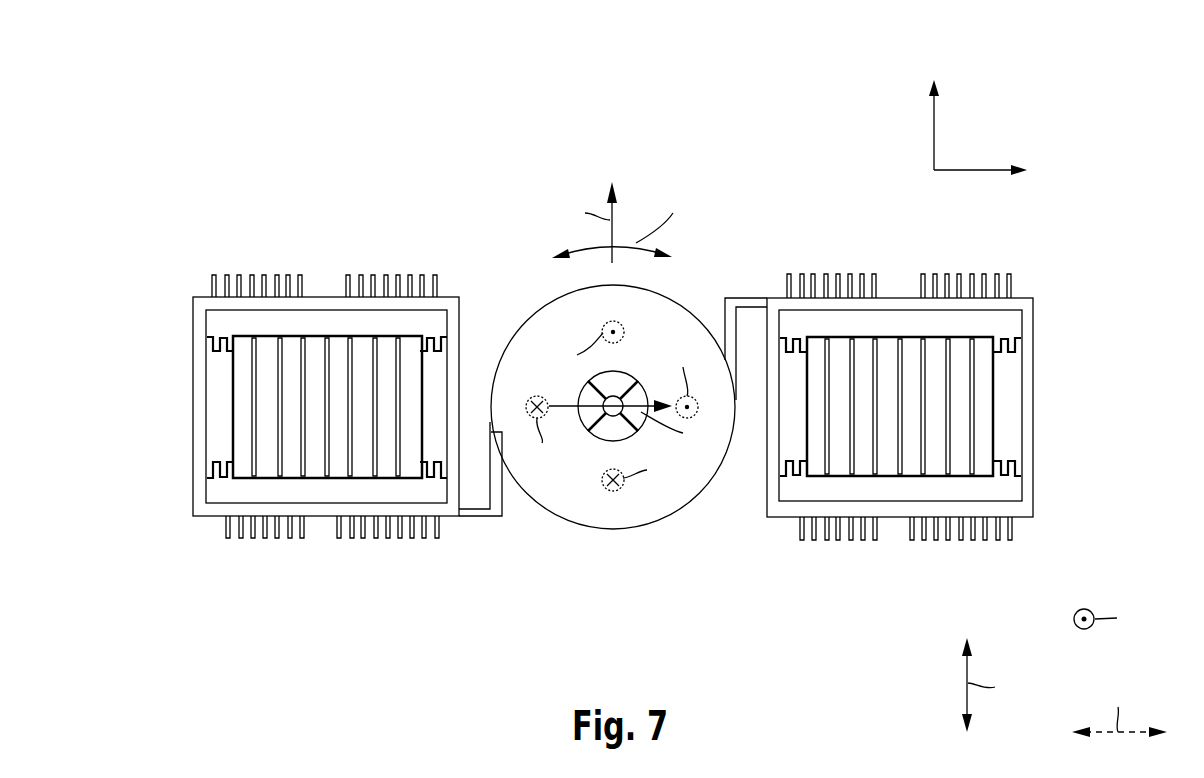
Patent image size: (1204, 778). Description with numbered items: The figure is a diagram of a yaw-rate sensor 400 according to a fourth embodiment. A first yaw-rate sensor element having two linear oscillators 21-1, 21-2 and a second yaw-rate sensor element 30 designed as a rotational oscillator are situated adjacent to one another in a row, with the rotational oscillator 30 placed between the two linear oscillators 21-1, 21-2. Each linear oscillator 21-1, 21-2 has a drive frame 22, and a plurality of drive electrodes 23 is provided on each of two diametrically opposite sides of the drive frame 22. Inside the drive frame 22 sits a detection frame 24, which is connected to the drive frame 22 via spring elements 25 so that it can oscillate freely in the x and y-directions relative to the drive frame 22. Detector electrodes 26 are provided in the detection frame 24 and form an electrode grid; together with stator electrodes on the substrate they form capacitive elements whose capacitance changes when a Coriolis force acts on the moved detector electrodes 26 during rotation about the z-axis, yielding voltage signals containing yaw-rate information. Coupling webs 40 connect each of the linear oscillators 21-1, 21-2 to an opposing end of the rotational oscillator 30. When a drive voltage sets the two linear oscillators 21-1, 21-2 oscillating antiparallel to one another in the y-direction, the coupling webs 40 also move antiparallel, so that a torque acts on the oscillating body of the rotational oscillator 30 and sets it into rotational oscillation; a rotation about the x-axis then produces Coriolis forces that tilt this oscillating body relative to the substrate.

The yaw-rate sensor 400 is at (303, 120).
The linear oscillator 21-1 is at (324, 568).
The linear oscillator 21-2 is at (864, 582).
The drive frame 22 is at (202, 497).
The drive electrodes 23 is at (226, 528).
The detection frame 24 is at (232, 418).
The spring elements 25 is at (212, 345).
The detector electrodes 26 is at (278, 368).
The second yaw-rate sensor element 30 is at (613, 552).
The coupling webs 40 is at (487, 518).